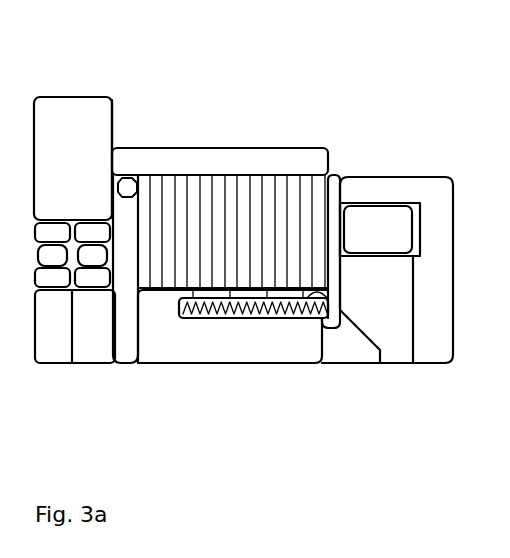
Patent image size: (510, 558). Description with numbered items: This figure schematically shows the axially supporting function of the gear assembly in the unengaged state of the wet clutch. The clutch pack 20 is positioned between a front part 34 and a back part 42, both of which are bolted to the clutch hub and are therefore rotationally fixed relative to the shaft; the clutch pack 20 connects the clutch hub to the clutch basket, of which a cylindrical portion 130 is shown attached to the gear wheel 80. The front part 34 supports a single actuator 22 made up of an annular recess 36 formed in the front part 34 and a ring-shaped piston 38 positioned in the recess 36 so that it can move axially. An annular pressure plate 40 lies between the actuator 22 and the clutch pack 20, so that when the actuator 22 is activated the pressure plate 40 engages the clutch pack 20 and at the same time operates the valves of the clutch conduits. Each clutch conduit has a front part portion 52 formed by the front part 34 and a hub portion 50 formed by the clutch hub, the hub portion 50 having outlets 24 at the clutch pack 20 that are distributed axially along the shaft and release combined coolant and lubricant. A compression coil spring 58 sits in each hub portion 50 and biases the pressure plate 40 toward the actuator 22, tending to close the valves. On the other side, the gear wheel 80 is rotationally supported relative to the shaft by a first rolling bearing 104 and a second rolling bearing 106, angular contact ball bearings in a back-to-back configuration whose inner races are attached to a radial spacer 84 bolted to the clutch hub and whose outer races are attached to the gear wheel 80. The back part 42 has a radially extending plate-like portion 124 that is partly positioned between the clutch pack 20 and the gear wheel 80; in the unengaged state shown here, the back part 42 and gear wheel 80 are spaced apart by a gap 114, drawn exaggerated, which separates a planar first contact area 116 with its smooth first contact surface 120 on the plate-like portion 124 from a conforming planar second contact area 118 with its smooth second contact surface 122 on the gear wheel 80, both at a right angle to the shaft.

The clutch pack 20 is at (298, 183).
The actuator 22 is at (368, 265).
The outlets 24 is at (230, 290).
The front part 34 is at (355, 185).
The annular recess 36 is at (412, 203).
The ring-shaped piston 38 is at (375, 227).
The pressure plate 40 is at (324, 330).
The back part 42 is at (127, 338).
The hub portion 50 is at (195, 322).
The front part portion 52 is at (352, 328).
The compression coil spring 58 is at (267, 299).
The gear wheel 80 is at (66, 117).
The radial spacer 84 is at (52, 353).
The first rolling bearing 104 is at (93, 283).
The second rolling bearing 106 is at (53, 283).
The gap 114 is at (115, 193).
The first contact area 116 is at (138, 185).
The second contact area 118 is at (103, 195).
The first contact surface 120 is at (122, 203).
The second contact surface 122 is at (104, 200).
The plate-like portion 124 is at (267, 162).
The cylindrical portion 130 is at (125, 223).